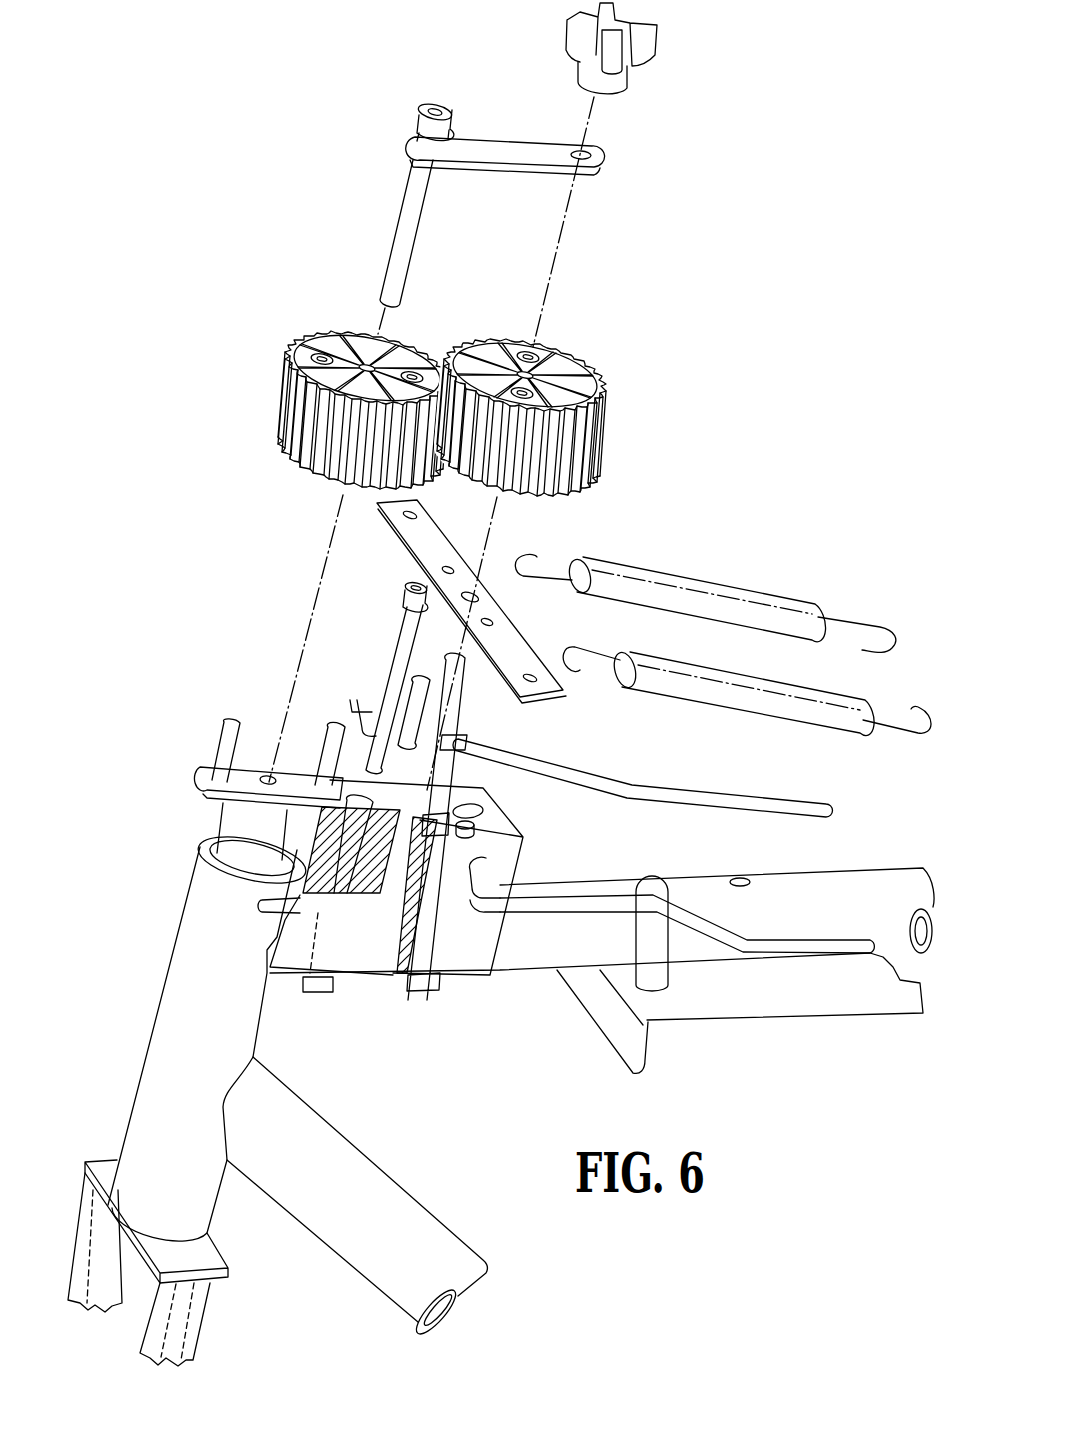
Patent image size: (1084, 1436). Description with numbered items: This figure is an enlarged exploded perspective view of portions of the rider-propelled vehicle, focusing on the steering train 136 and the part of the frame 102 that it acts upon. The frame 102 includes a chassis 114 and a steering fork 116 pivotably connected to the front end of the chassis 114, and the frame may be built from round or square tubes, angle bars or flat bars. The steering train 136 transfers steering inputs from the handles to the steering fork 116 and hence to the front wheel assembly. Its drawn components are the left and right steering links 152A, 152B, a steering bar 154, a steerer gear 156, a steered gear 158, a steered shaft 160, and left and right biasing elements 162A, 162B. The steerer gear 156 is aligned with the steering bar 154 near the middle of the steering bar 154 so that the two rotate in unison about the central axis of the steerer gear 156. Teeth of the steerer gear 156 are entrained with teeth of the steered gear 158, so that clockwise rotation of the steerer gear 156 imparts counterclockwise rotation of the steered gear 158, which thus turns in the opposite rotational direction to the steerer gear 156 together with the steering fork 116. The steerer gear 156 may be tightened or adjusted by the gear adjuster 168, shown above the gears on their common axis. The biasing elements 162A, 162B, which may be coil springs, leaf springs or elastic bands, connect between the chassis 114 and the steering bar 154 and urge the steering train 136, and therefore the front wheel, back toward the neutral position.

The frame 102 is at (343, 1090).
The chassis 114 is at (377, 1173).
The steering fork 116 is at (224, 1321).
The steering train 136 is at (417, 388).
The left steering link 152A is at (727, 928).
The right steering link 152B is at (598, 775).
The steering bar 154 is at (515, 650).
The steerer gear 156 is at (598, 440).
The steered gear 158 is at (287, 393).
The steered shaft 160 is at (211, 816).
The left biasing element 162A is at (852, 770).
The right biasing element 162B is at (826, 569).
The gear adjuster 168 is at (668, 82).